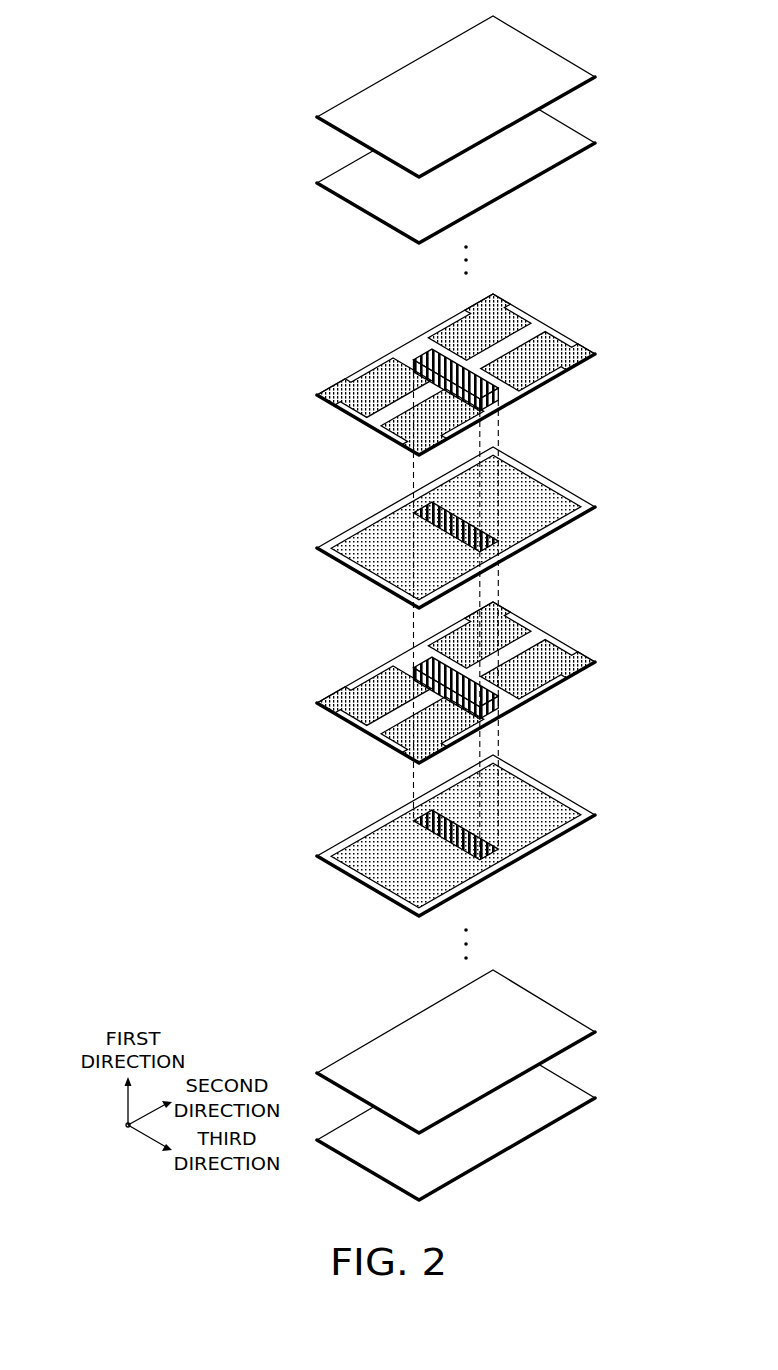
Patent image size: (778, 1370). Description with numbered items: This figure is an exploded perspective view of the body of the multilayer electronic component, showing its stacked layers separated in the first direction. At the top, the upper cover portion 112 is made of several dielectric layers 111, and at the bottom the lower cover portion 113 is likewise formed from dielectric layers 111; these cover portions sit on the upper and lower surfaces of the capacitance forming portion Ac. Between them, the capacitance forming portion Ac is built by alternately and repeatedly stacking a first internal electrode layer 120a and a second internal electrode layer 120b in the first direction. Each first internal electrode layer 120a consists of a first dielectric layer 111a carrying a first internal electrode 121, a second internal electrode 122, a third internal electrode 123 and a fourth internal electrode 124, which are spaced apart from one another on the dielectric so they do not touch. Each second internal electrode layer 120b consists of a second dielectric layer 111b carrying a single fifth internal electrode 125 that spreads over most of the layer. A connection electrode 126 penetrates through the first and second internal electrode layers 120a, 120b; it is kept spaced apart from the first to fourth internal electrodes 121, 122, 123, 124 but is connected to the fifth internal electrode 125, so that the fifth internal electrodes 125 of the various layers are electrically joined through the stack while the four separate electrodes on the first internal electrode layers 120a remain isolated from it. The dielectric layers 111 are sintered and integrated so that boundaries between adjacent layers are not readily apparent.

The dielectric layer 111 is at (347, 418).
The first dielectric layer 111a is at (538, 323).
The second dielectric layer 111b is at (588, 503).
The upper cover portion 112 is at (581, 66).
The lower cover portion 113 is at (581, 1022).
The first internal electrode layer 120a is at (304, 393).
The second internal electrode layer 120b is at (304, 547).
The first internal electrode 121 is at (353, 375).
The second internal electrode 122 is at (490, 314).
The third internal electrode 123 is at (378, 440).
The fourth internal electrode 124 is at (578, 338).
The fifth internal electrode 125 is at (548, 498).
The connection electrode 126 is at (430, 356).
The capacitance forming portion Ac is at (650, 895).